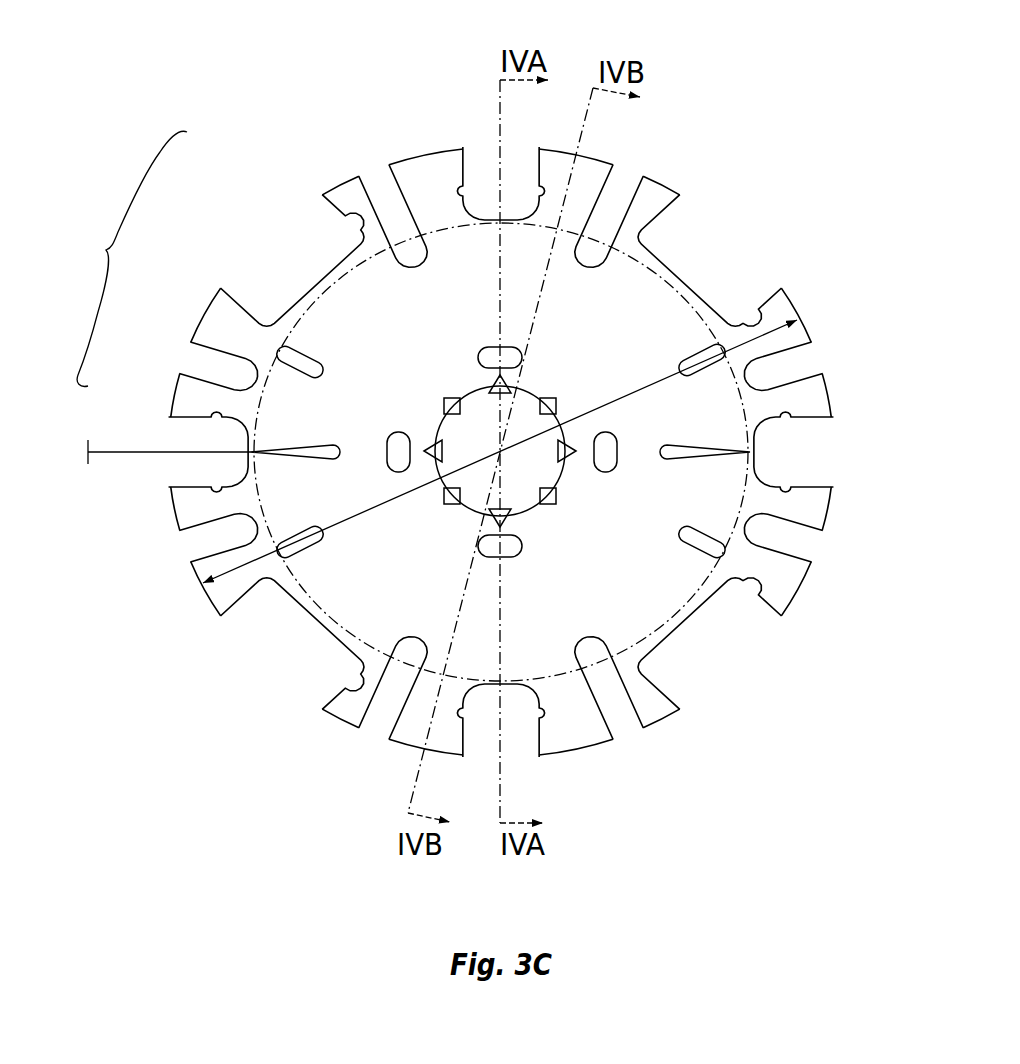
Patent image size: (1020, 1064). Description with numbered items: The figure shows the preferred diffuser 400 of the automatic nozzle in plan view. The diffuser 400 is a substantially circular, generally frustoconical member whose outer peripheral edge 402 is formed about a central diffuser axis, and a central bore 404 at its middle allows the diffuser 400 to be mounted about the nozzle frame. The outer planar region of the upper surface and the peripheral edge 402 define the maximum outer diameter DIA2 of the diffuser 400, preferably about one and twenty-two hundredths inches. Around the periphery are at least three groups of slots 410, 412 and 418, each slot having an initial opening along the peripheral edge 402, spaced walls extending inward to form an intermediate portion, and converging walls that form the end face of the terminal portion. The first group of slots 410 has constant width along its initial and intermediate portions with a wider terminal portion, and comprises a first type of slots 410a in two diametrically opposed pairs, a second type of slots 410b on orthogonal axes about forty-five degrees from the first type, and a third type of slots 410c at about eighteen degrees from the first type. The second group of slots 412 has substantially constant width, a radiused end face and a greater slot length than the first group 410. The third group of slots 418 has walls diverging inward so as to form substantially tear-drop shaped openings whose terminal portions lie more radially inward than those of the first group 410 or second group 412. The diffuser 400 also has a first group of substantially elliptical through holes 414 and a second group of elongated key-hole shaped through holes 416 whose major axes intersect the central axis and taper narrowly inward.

The diffuser 400 is at (748, 98).
The outer peripheral edge 402 is at (420, 150).
The central bore 404 is at (550, 466).
The first group of slots 410 is at (127, 258).
The first type of slots 410a is at (483, 153).
The second type of slots 410b is at (290, 248).
The third type of slots 410c is at (205, 363).
The second group of slots 412 is at (380, 176).
The first group of through holes 414 is at (488, 347).
The second group of through holes 416 is at (296, 352).
The third group of slots 418 is at (330, 443).
The maximum outer diameter DIA2 is at (783, 302).